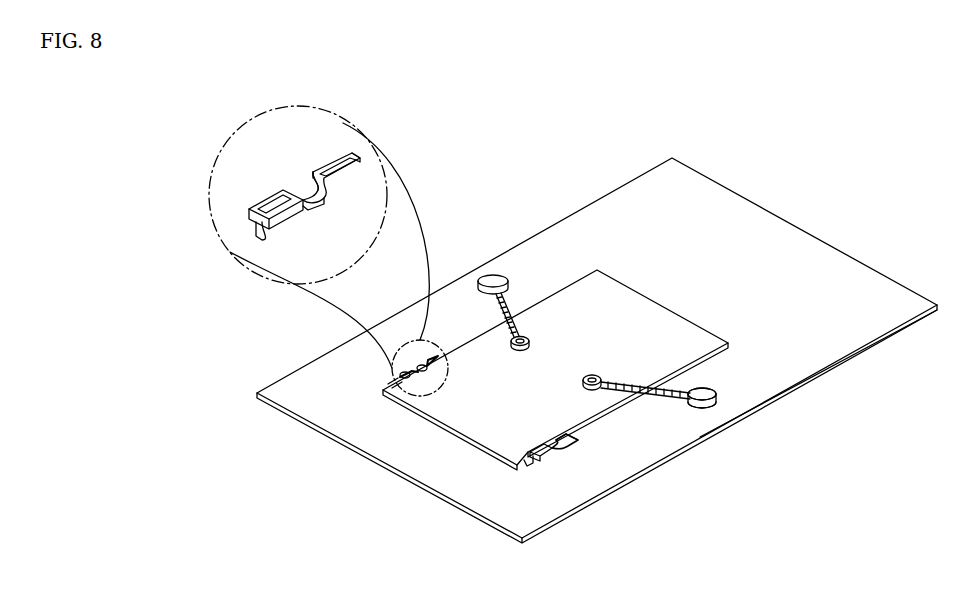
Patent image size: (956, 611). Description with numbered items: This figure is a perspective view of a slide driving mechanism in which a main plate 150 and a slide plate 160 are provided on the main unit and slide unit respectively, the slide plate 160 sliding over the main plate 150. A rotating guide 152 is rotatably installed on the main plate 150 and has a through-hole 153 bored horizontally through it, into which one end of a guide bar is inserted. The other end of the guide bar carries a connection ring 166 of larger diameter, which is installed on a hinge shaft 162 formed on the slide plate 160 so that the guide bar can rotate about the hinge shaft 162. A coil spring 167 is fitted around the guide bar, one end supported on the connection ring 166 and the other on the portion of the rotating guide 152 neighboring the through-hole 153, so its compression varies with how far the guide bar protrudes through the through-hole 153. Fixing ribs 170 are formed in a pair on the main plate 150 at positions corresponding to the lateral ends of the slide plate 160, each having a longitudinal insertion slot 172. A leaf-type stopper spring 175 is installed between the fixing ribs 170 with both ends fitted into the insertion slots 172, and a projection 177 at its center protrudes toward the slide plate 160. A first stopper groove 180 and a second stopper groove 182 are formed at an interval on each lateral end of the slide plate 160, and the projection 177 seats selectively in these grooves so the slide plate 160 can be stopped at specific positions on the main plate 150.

The main plate 150 is at (830, 280).
The rotating guide 152 is at (720, 418).
The through-hole 153 is at (702, 412).
The slide plate 160 is at (623, 325).
The hinge shaft 162 is at (783, 397).
The connection ring 166 is at (662, 393).
The coil spring 167 is at (492, 276).
The fixing rib 170 is at (257, 207).
The insertion slot 172 is at (337, 152).
The stopper spring 175 is at (303, 190).
The projection 177 is at (350, 187).
The first stopper groove 180 is at (303, 212).
The second stopper groove 182 is at (392, 374).